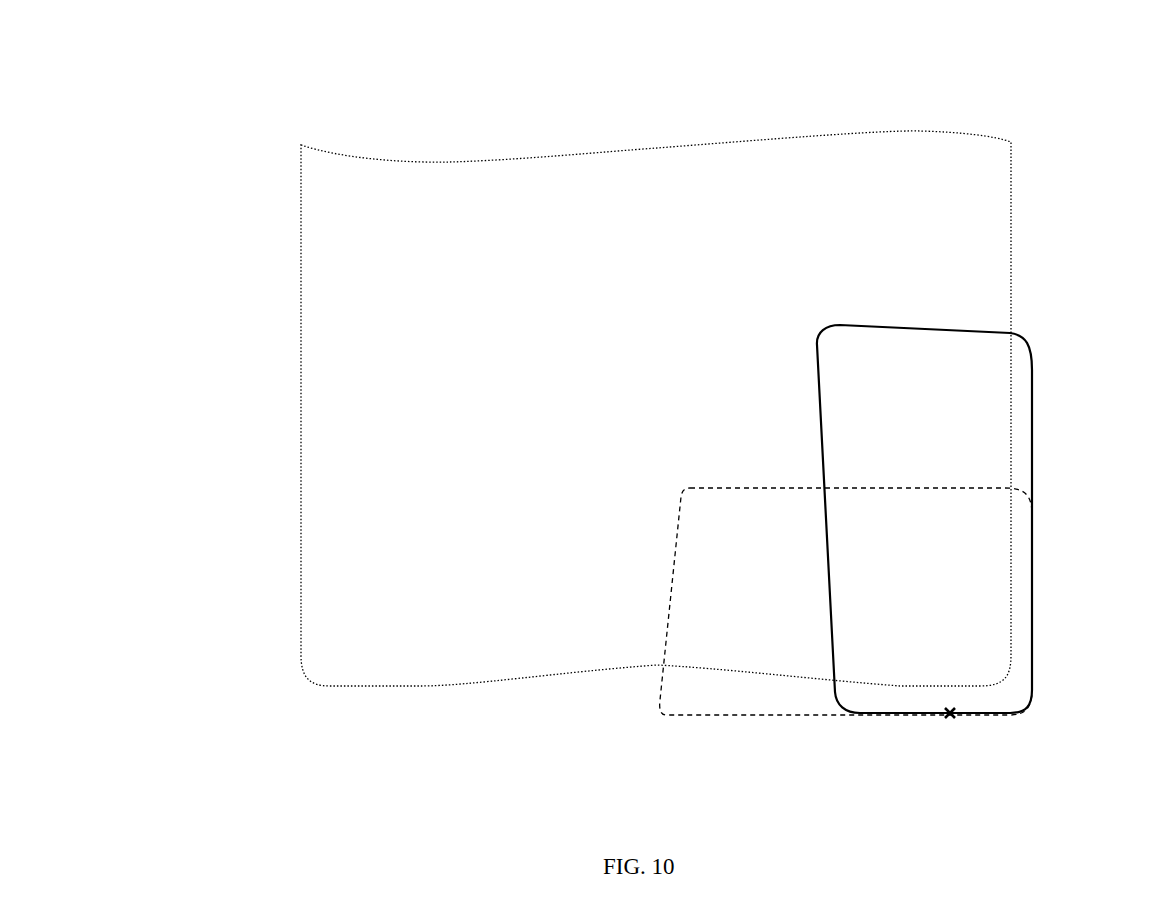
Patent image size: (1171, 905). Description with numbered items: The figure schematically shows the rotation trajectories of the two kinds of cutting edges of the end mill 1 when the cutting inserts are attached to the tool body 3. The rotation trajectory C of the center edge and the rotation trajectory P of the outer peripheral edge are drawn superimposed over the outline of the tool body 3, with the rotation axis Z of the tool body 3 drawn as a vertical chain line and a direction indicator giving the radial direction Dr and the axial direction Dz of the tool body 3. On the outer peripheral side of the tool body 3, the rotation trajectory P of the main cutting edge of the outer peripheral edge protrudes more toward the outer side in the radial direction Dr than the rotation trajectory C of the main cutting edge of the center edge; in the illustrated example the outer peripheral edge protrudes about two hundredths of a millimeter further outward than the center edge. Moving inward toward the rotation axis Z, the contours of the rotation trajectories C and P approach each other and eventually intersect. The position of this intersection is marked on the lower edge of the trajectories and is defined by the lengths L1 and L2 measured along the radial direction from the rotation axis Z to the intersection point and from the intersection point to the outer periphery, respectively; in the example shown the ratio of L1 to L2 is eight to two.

The end mill 1 is at (632, 842).
The tool body 3 is at (1011, 245).
The rotation trajectory of outer peripheral edge P is at (1032, 443).
The rotation trajectory of center edge C is at (727, 488).
The rotation axis of tool body Z is at (657, 117).
The distance L1 is at (950, 698).
The distance L2 is at (1032, 697).
The radial direction of tool body Dr is at (428, 79).
The axial direction of tool body Dz is at (217, 22).